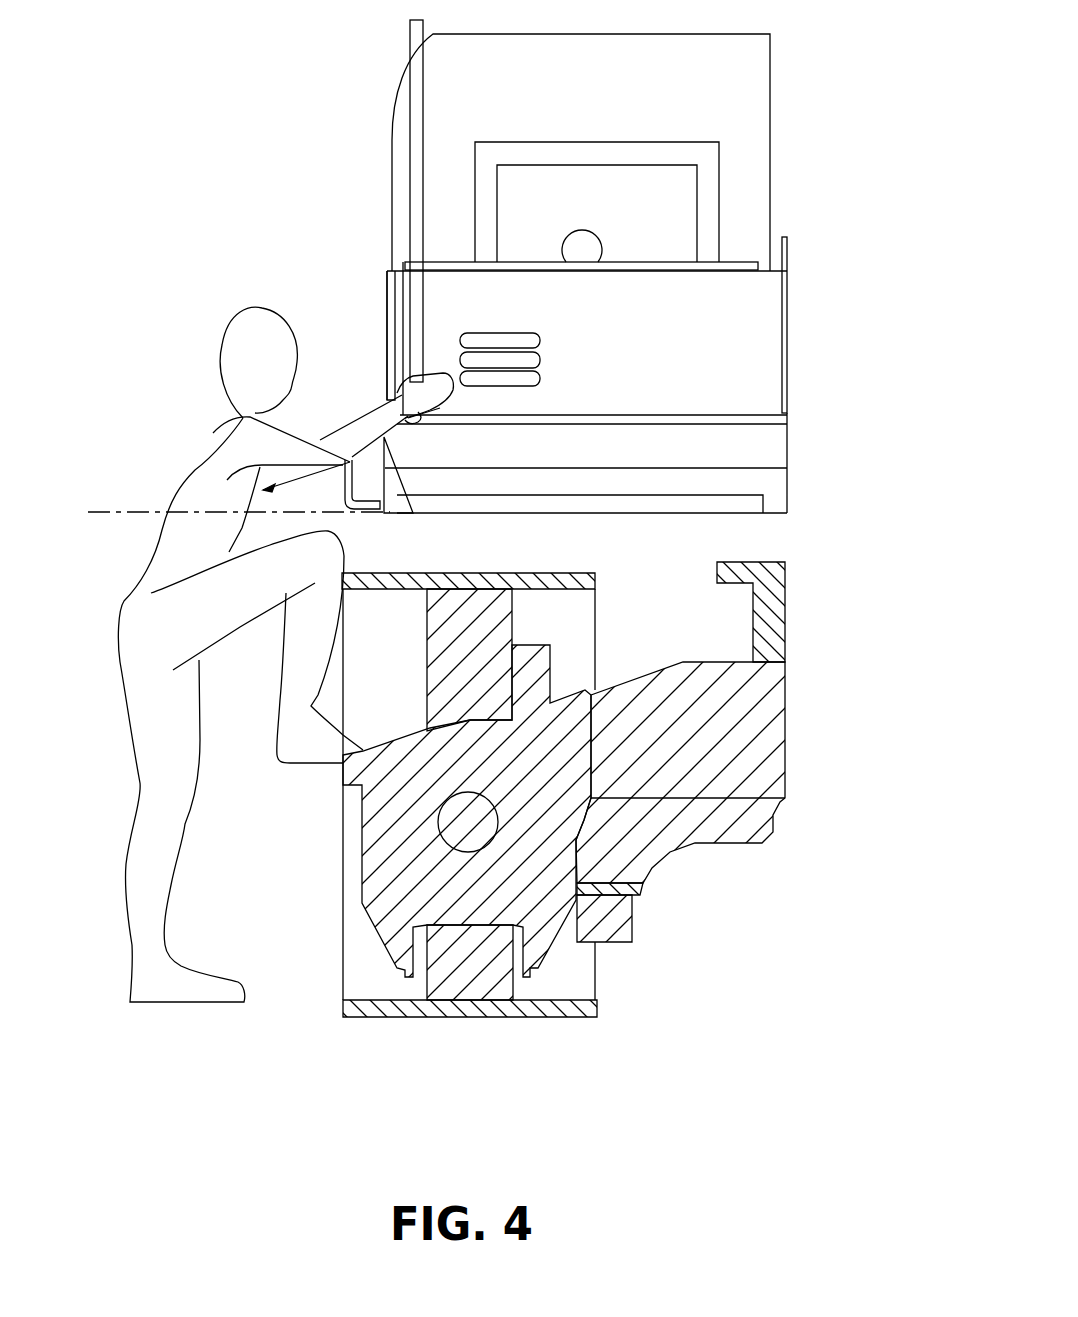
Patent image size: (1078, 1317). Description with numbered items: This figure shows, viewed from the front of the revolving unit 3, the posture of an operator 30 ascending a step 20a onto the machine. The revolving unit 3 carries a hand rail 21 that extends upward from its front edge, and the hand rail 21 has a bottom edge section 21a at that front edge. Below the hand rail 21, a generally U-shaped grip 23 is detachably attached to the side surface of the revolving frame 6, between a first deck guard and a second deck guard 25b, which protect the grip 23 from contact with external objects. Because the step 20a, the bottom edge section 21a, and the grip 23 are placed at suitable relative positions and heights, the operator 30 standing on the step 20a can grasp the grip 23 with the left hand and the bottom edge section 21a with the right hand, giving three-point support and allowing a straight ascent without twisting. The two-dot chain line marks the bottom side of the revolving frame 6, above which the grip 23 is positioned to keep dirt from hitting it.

The revolving unit 3 is at (417, 353).
The revolving frame 6 is at (410, 443).
The hand rail 21 is at (415, 40).
The bottom edge section 21a is at (385, 288).
The grip 23 is at (243, 497).
The second deck guard 25b is at (327, 440).
The operator 30 is at (258, 358).
The step 20a is at (355, 778).